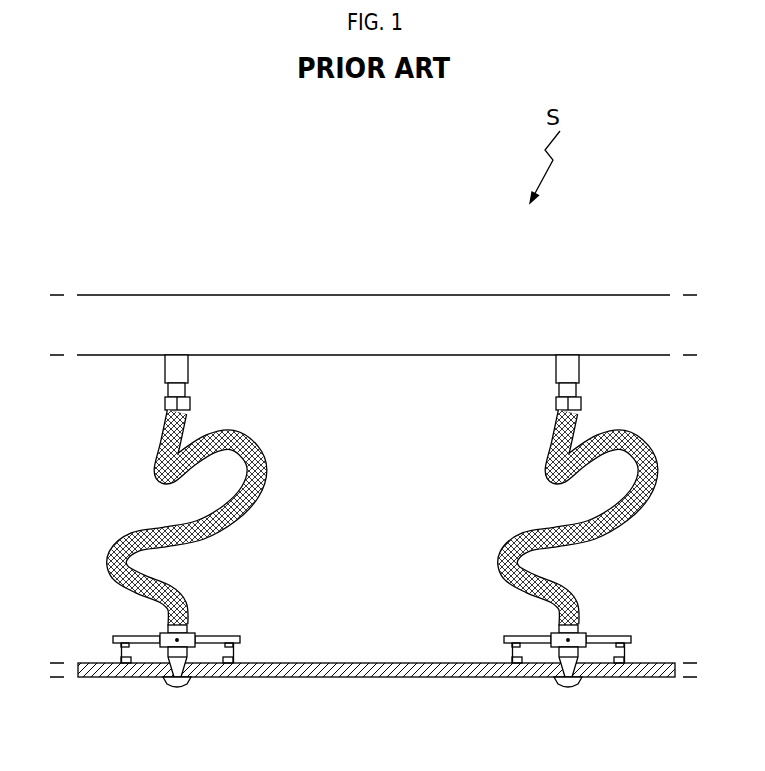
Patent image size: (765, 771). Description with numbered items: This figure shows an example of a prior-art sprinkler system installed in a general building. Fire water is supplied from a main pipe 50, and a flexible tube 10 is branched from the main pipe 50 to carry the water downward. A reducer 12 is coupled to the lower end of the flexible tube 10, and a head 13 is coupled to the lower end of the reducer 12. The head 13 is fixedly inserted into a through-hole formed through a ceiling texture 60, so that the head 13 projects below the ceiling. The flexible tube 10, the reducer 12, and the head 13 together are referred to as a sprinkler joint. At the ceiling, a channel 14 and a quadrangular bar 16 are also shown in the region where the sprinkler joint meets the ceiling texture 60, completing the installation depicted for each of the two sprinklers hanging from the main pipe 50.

The flexible tube 10 is at (266, 462).
The reducer 12 is at (188, 652).
The head 13 is at (184, 690).
The channel 14 is at (236, 651).
The quadrangular bar 16 is at (239, 636).
The main pipe 50 is at (397, 312).
The ceiling texture 60 is at (369, 678).